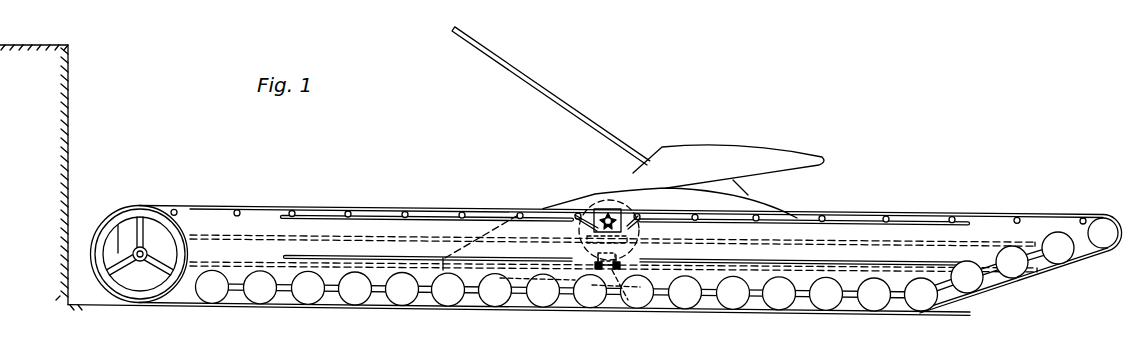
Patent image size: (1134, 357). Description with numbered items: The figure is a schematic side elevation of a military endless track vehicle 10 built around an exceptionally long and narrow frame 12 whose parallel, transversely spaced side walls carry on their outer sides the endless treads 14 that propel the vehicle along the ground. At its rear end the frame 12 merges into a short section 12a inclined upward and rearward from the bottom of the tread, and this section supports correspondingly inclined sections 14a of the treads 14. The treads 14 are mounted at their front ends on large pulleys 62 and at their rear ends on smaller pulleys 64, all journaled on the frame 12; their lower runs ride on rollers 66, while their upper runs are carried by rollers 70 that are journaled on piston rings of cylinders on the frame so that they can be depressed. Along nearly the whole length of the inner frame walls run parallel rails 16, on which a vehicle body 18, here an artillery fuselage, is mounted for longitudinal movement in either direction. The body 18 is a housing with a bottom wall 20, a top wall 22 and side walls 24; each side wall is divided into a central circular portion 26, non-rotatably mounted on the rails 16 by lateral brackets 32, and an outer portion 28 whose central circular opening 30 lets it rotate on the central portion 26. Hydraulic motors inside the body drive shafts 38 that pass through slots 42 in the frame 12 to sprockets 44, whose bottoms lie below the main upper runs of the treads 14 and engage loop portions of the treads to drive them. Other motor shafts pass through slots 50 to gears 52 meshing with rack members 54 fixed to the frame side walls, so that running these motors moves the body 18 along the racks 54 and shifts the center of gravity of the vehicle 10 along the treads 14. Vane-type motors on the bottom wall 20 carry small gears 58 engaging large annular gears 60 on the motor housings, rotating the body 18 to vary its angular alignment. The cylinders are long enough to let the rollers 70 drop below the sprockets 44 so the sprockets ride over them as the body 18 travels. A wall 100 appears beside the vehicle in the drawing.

The endless track vehicle 10 is at (197, 205).
The frame 12 is at (259, 216).
The inclined rear section 12a is at (1056, 221).
The endless treads 14 is at (435, 210).
The inclined tread sections 14a is at (997, 292).
The rails 16 is at (267, 241).
The vehicle body 18 is at (561, 198).
The bottom wall 20 is at (516, 277).
The top wall 22 is at (546, 207).
The side walls 24 is at (735, 203).
The central circular portions 26 is at (582, 252).
The outer portions 28 is at (636, 184).
The central circular openings 30 is at (577, 246).
The lateral brackets 32 is at (636, 235).
The shafts 38 is at (621, 211).
The slots 42 is at (374, 214).
The sprockets 44 is at (590, 227).
The slots 50 is at (325, 259).
The gears 52 is at (603, 291).
The rack members 54 is at (384, 264).
The small gears 58 is at (642, 258).
The large annular gears 60 is at (651, 215).
The large pulleys 62 is at (122, 296).
The smaller pulleys 64 is at (1107, 243).
The rollers 66 is at (354, 298).
The rollers 70 is at (348, 211).
The wall 100 is at (70, 126).